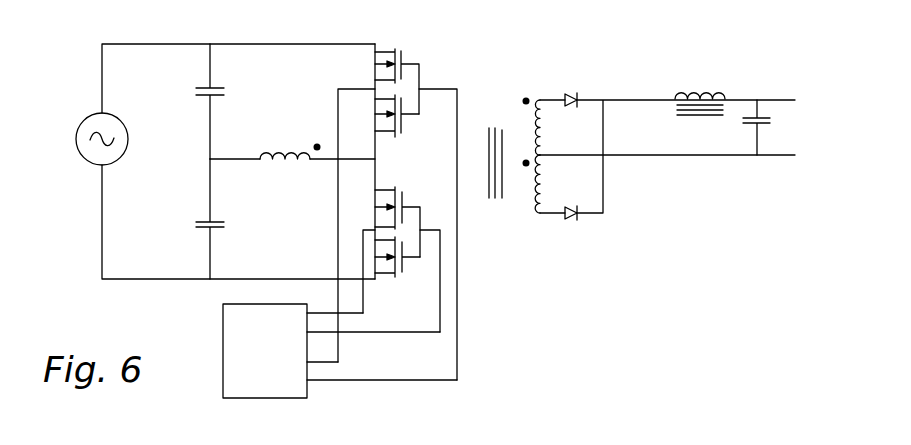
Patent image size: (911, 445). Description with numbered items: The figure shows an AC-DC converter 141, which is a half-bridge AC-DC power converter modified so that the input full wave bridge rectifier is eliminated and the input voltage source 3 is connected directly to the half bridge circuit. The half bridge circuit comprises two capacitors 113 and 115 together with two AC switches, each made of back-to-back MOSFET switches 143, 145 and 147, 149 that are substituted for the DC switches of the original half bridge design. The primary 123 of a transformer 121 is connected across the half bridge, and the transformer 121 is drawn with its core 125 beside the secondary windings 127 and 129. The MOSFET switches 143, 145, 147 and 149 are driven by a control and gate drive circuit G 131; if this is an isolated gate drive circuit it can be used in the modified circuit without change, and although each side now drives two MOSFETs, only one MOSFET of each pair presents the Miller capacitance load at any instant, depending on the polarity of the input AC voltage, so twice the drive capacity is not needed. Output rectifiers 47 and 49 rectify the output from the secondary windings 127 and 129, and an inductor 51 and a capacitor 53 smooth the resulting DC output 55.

The AC-DC converter 141 is at (82, 45).
The input voltage source 3 is at (75, 133).
The capacitor 113 is at (228, 105).
The capacitor 115 is at (229, 229).
The primary 123 is at (267, 135).
The MOSFET switch 143 is at (366, 70).
The MOSFET switch 145 is at (367, 107).
The MOSFET switch 147 is at (375, 206).
The MOSFET switch 149 is at (367, 262).
The control and gate drive circuit G 131 is at (200, 352).
The transformer 121 is at (513, 139).
The transformer core 125 is at (492, 122).
The secondary winding 127 is at (525, 120).
The secondary winding 129 is at (529, 189).
The output rectifier 49 is at (564, 90).
The output rectifier 47 is at (568, 223).
The inductor 51 is at (680, 89).
The capacitor 53 is at (747, 132).
The DC output 55 is at (828, 110).